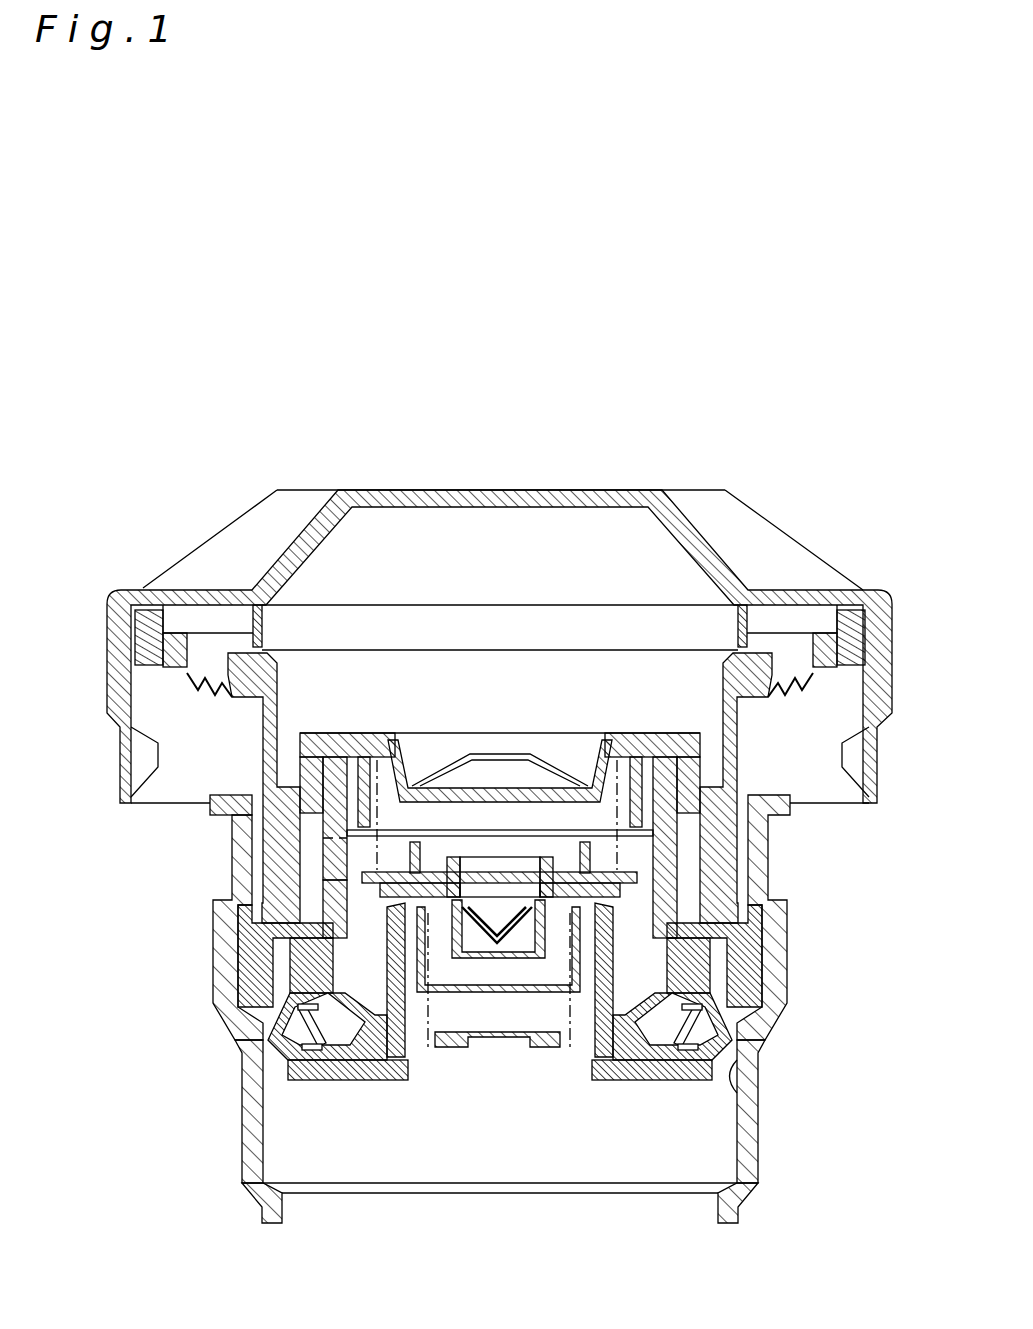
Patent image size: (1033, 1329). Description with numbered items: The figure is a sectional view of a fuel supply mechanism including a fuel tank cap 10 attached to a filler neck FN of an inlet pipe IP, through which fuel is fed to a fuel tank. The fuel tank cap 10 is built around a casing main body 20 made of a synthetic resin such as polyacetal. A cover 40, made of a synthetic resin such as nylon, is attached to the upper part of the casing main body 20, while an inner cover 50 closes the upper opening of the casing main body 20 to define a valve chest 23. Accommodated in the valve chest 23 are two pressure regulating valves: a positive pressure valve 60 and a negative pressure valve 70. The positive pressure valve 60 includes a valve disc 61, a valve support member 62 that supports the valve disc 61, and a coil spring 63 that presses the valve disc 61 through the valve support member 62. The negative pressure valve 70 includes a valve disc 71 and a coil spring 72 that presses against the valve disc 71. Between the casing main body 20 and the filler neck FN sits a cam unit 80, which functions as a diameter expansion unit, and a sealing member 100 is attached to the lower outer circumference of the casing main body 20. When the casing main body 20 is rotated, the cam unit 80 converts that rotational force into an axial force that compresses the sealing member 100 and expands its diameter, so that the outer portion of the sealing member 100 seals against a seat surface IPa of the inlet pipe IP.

The fuel tank cap 10 is at (819, 430).
The cover 40 is at (783, 585).
The casing main body 20 is at (739, 851).
The valve chest 23 is at (240, 797).
The inner cover 50 is at (356, 721).
The positive pressure valve 60 is at (297, 925).
The valve disc 61 is at (265, 975).
The valve support member 62 is at (351, 901).
The coil spring 63 is at (340, 835).
The negative pressure valve 70 is at (300, 1008).
The valve disc 71 is at (312, 1025).
The coil spring 72 is at (370, 1082).
The cam unit 80 is at (755, 952).
The sealing member 100 is at (763, 1007).
The filler neck FN is at (787, 890).
The inlet pipe IP is at (758, 1030).
The seat surface IPa is at (737, 1087).